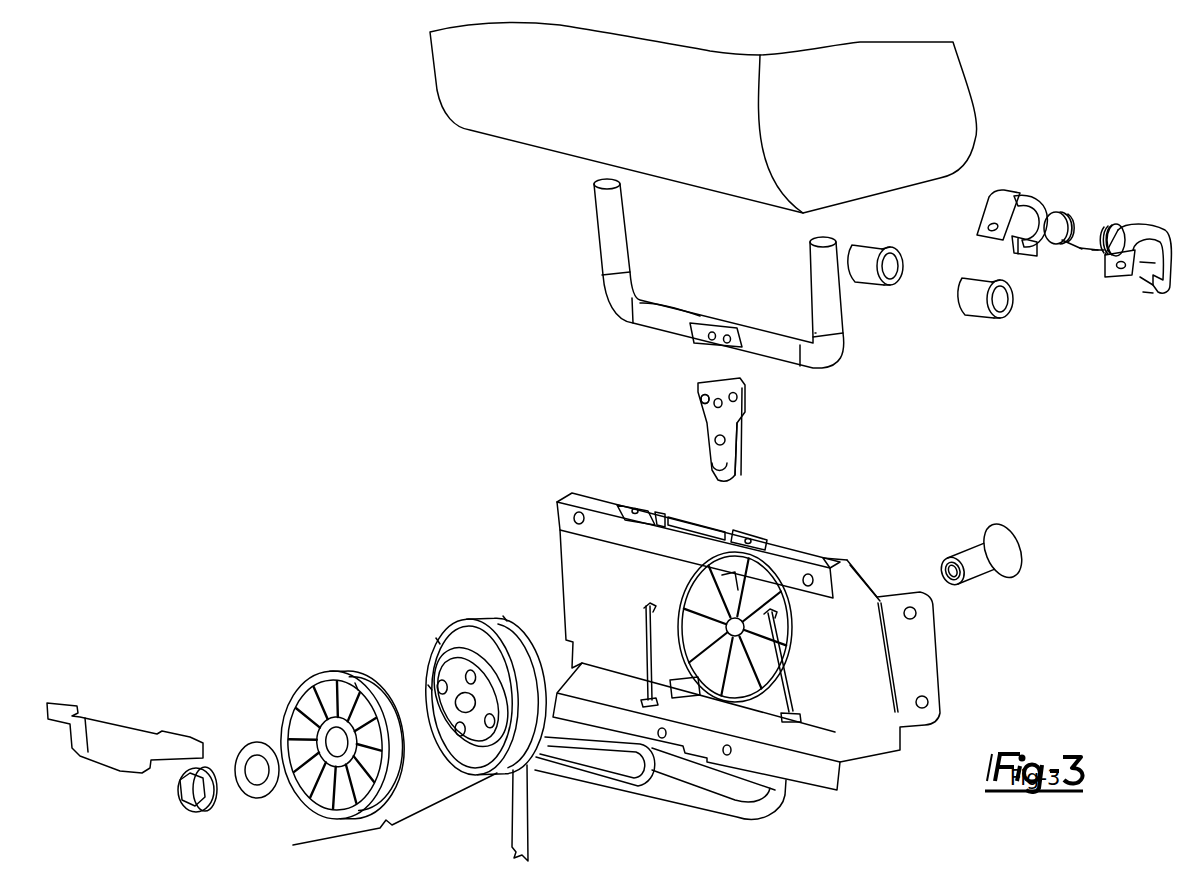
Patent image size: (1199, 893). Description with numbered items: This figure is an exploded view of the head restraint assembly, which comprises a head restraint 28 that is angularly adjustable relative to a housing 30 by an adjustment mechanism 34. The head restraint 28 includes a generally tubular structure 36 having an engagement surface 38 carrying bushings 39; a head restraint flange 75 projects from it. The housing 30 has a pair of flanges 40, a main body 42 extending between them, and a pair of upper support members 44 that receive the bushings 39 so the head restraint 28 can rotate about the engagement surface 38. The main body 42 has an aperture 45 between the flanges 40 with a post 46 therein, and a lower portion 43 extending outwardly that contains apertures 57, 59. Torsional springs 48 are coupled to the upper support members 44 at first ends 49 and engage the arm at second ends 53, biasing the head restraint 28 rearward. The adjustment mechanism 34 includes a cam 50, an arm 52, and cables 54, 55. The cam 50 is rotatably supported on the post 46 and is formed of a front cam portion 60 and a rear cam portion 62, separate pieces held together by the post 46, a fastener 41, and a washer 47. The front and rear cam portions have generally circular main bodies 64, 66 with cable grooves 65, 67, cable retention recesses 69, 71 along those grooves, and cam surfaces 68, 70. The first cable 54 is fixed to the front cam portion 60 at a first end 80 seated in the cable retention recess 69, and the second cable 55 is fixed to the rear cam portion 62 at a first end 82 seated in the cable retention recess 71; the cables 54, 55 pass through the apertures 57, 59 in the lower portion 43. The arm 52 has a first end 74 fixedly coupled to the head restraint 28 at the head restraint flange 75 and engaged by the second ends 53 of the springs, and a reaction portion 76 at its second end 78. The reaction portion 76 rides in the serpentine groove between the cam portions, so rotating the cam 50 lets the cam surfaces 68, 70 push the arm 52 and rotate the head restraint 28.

The head restraint 28 is at (1008, 368).
The housing 30 is at (893, 608).
The adjustment mechanism 34 is at (342, 596).
The tubular structure 36 is at (845, 348).
The engagement surface 38 is at (787, 363).
The bushings 39 is at (880, 246).
The flanges 40 is at (925, 655).
The fastener 41 is at (183, 795).
The main body 42 is at (865, 775).
The lower portion 43 is at (848, 746).
The upper support members 44 is at (1011, 200).
The aperture 45 is at (735, 628).
The post 46 is at (975, 553).
The washer 47 is at (265, 795).
The torsional springs 48 is at (1056, 210).
The first ends 49 is at (1013, 245).
The cam 50 is at (395, 816).
The arm 52 is at (702, 388).
The second ends 53 is at (1078, 249).
The first cable 54 is at (640, 652).
The second cable 55 is at (787, 641).
The aperture 57 is at (660, 700).
The aperture 59 is at (782, 719).
The front cam portion 60 is at (333, 665).
The rear cam portion 62 is at (457, 622).
The main body 64 is at (290, 697).
The cable groove 65 is at (356, 688).
The main body 66 is at (438, 641).
The cable groove 67 is at (505, 619).
The cam surface 68 is at (398, 737).
The cable retention recess 69 is at (287, 710).
The cam surface 70 is at (430, 688).
The cable retention recess 71 is at (540, 678).
The first end 74 is at (742, 405).
The head restraint flange 75 is at (705, 337).
The reaction portion 76 is at (742, 458).
The second end 78 is at (715, 462).
The first end 80 is at (650, 605).
The first end 82 is at (772, 620).